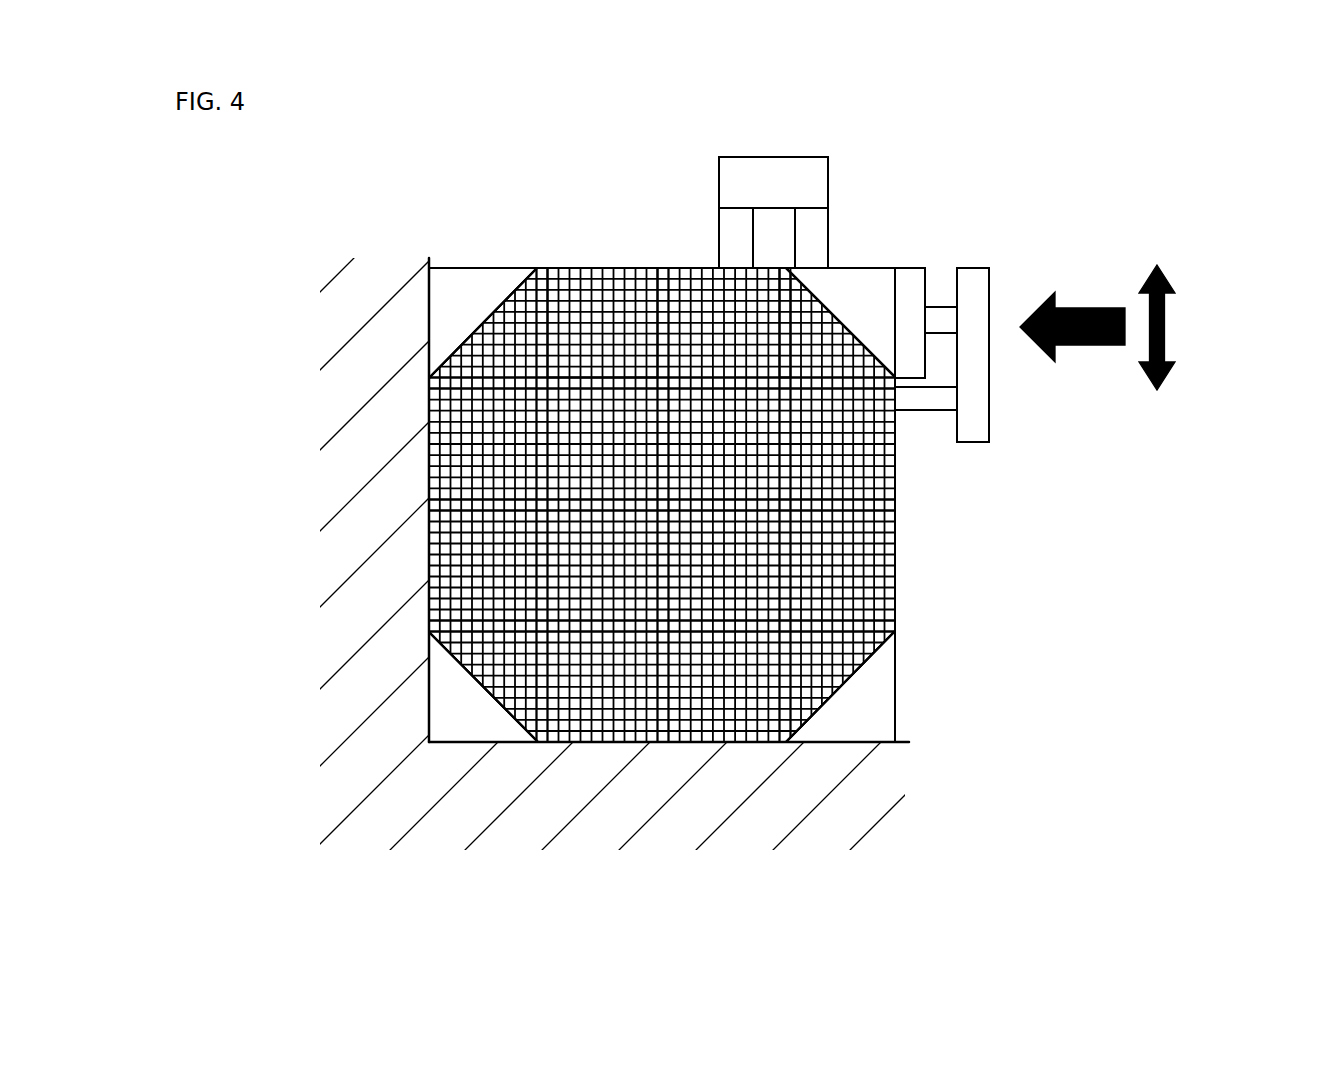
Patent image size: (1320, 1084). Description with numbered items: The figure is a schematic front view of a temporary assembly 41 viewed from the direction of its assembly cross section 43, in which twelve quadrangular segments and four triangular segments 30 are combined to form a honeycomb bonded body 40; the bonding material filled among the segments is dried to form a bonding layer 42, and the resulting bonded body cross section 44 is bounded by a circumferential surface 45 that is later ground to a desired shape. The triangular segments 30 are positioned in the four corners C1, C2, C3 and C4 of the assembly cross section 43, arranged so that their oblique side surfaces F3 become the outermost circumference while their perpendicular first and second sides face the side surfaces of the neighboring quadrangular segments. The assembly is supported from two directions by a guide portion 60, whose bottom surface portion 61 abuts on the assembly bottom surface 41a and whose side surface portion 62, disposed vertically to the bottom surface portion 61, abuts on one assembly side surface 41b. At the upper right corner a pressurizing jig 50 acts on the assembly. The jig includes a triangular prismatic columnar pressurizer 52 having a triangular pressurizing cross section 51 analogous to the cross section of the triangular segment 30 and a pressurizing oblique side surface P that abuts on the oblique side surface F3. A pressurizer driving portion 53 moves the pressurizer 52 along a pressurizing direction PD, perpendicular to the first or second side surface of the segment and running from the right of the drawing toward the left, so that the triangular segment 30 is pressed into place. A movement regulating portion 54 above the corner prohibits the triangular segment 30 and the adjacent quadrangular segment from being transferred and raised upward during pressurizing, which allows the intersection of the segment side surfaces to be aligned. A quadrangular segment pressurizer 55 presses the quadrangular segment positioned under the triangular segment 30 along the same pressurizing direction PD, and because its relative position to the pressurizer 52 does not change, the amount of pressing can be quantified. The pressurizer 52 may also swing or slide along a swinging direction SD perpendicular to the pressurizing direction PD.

The triangular segment 30 is at (520, 290).
The honeycomb bonded body 40 is at (630, 517).
The temporary assembly 41 is at (652, 147).
The assembly bottom surface 41a is at (685, 742).
The assembly side surface 41b is at (428, 580).
The bonding layer 42 is at (542, 268).
The assembly cross section 43 is at (724, 505).
The bonded body cross section 44 is at (888, 562).
The circumferential surface 45 is at (591, 268).
The pressurizing jig 50 is at (885, 287).
The triangular pressurizing cross section 51 is at (918, 291).
The pressurizer 52 is at (873, 297).
The pressurizer driving portion 53 is at (983, 300).
The movement regulating portion 54 is at (790, 172).
The quadrangular segment pressurizer 55 is at (928, 400).
The guide portion 60 is at (660, 513).
The bottom surface portion 61 is at (875, 742).
The side surface portion 62 is at (430, 300).
The pressurizing oblique side surface P is at (780, 284).
The oblique side surface F3 is at (843, 325).
The corner C1 is at (890, 237).
The corner C2 is at (950, 680).
The corner C3 is at (462, 725).
The corner C4 is at (466, 251).
The swinging direction SD is at (1168, 318).
The pressurizing direction PD is at (1090, 348).